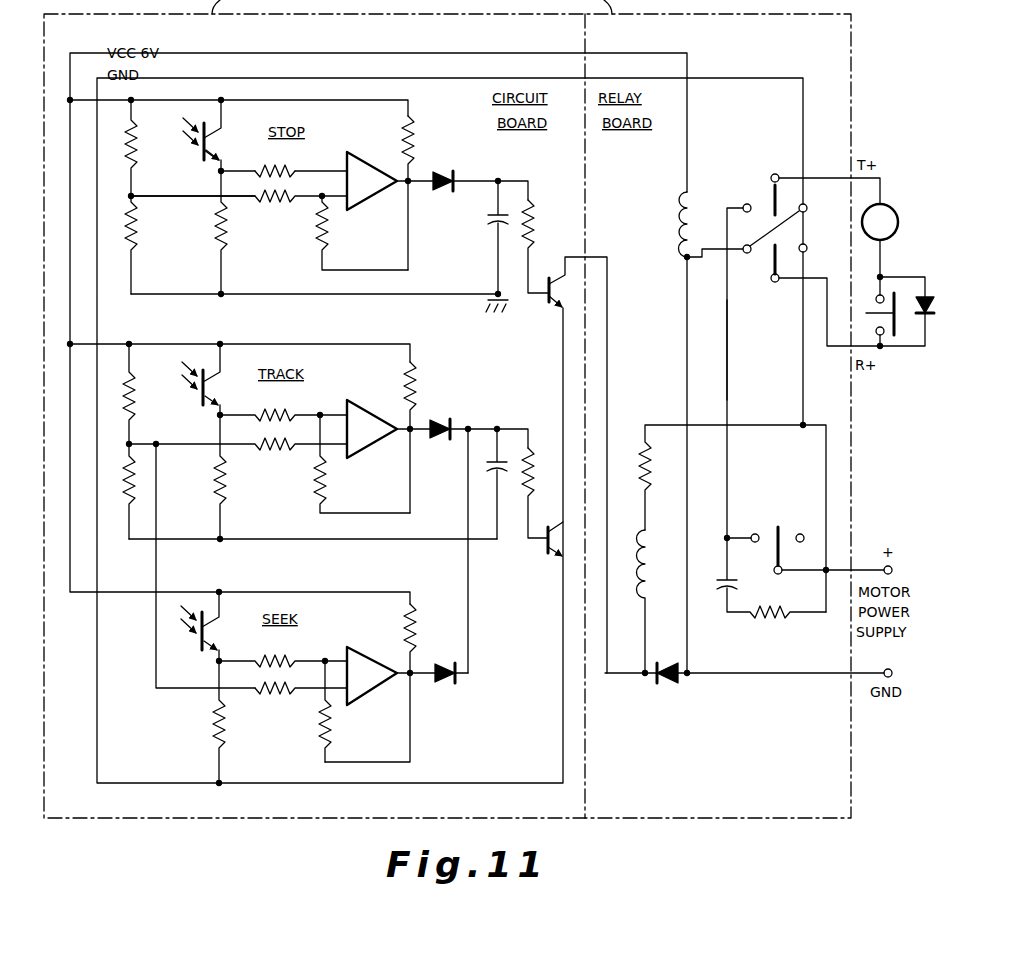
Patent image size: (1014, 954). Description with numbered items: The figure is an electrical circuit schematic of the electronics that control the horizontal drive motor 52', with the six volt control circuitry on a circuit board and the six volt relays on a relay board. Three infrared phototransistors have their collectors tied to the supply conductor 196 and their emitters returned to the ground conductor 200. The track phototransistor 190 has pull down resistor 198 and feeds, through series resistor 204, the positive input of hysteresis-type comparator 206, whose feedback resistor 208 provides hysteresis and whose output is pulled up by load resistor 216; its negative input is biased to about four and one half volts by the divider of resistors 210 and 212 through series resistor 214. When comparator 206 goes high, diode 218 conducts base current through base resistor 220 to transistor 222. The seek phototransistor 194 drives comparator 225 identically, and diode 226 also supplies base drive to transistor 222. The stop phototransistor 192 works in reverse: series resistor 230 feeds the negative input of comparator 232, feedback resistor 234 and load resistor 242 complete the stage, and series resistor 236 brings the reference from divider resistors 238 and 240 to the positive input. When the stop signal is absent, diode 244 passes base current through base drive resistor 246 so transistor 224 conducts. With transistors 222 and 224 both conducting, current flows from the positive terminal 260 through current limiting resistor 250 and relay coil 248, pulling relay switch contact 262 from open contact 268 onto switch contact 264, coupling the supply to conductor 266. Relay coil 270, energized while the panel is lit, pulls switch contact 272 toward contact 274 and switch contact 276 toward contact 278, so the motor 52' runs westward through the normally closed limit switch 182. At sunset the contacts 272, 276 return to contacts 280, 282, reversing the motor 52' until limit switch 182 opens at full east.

The supply conductor 196 is at (268, 52).
The ground conductor 200 is at (300, 76).
The infrared phototransistor 192 is at (224, 134).
The infrared phototransistor 190 is at (198, 406).
The infrared phototransistor 194 is at (206, 644).
The series resistor 230 is at (268, 166).
The hysteresis-type comparator 232 is at (385, 126).
The feedback resistor 234 is at (328, 238).
The series resistor 236 is at (257, 206).
The resistor 238 is at (137, 160).
The resistor 240 is at (137, 226).
The load resistor 242 is at (414, 128).
The diode 244 is at (447, 168).
The base drive resistor 246 is at (550, 192).
The transistor 224 is at (540, 305).
The transistor 222 is at (546, 552).
The resistor 210 is at (135, 378).
The resistor 212 is at (126, 502).
The series resistor 204 is at (278, 408).
The hysteresis-type comparator 206 is at (385, 376).
The feedback resistor 208 is at (326, 486).
The series resistor 214 is at (262, 456).
The pull down resistor 198 is at (226, 484).
The load resistor 216 is at (416, 372).
The diode 218 is at (440, 412).
The base resistor 220 is at (531, 442).
The comparator 225 is at (378, 620).
The diode 226 is at (445, 682).
The relay coil 270 is at (676, 213).
The switch contact 274 is at (744, 202).
The switch contact 272 is at (790, 146).
The switch contact 276 is at (776, 284).
The switch contact 278 is at (745, 255).
The contact 280 is at (817, 210).
The contact 282 is at (819, 250).
The conductor 266 is at (730, 380).
The current limiting resistor 250 is at (644, 454).
The relay coil 248 is at (640, 590).
The switch contact 264 is at (748, 534).
The open contact 268 is at (810, 518).
The relay switch contact 262 is at (776, 571).
The positive terminal 260 is at (892, 566).
The horizontal drive motor 52' is at (900, 273).
The limit switch 182 is at (900, 336).